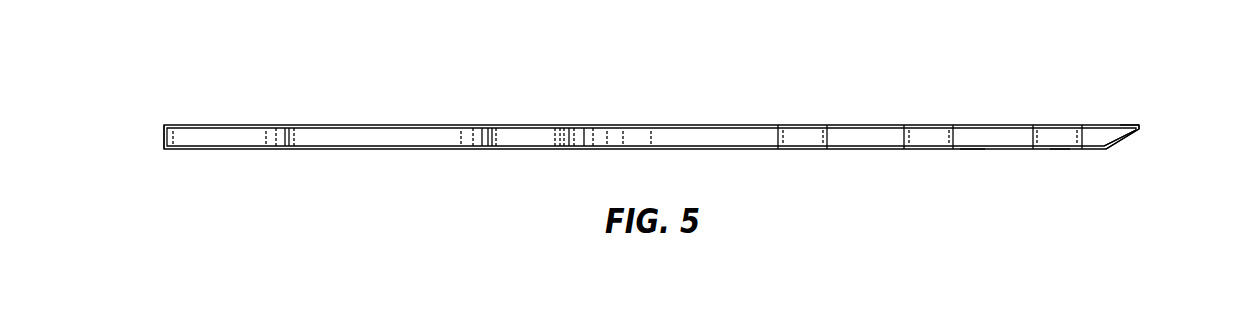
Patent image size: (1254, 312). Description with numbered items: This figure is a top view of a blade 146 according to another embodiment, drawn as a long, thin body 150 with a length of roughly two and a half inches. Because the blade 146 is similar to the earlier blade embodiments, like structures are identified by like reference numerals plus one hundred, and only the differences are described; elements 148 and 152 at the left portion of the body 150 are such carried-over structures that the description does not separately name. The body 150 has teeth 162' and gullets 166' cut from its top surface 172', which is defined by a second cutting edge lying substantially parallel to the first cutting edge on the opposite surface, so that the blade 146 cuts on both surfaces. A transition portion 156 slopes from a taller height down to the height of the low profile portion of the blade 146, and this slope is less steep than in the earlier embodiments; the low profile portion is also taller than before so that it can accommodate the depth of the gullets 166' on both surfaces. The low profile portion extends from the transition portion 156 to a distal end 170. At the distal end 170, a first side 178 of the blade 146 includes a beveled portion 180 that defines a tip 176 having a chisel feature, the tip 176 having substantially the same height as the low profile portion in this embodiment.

The blade 146 is at (806, 48).
The body 148 is at (410, 133).
The body 150 is at (333, 128).
The head end 152 is at (201, 133).
The transition portion 156 is at (582, 133).
The teeth 162' is at (934, 107).
The gullets 166' is at (914, 170).
The top surface 172' is at (977, 181).
The tip 176 is at (1134, 108).
The distal end 170 is at (1140, 127).
The first side 178 is at (1058, 148).
The beveled portion 180 is at (1122, 142).